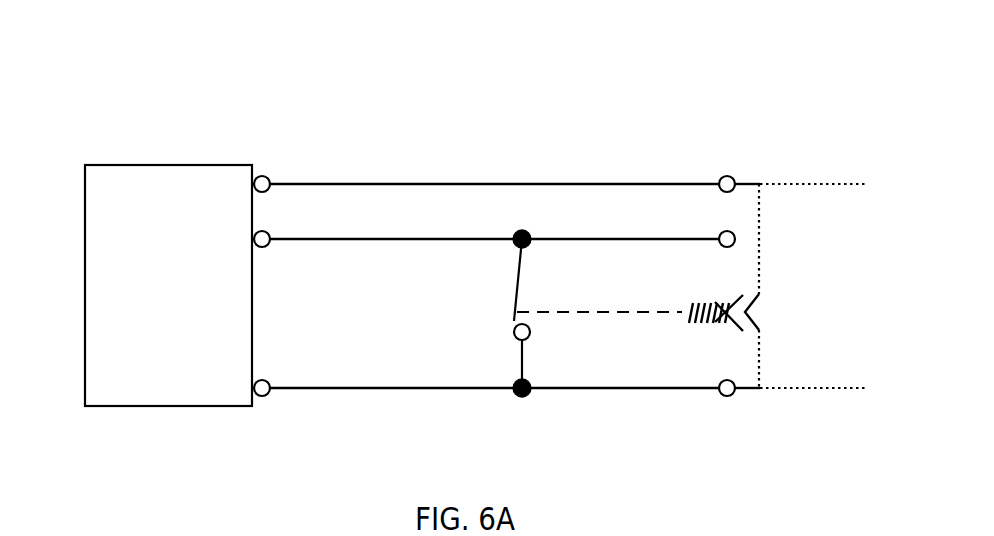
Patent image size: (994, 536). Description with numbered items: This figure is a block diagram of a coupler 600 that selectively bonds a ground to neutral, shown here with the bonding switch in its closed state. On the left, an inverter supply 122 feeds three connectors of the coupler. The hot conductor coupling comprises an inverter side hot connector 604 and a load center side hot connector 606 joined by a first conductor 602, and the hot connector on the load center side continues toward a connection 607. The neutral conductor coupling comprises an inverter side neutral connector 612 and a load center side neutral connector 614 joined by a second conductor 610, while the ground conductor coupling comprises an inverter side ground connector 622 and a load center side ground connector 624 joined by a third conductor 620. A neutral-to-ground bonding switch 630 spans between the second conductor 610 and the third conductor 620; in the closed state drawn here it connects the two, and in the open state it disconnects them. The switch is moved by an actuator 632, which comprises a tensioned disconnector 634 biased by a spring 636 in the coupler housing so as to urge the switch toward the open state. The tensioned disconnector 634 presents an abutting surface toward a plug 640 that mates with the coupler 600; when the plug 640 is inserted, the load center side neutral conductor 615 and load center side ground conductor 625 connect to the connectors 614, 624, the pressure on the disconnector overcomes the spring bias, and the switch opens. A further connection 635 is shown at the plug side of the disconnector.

The coupler 600 is at (568, 72).
The inverter supply 122 is at (183, 311).
The first conductor 602 is at (347, 183).
The inverter side hot connector 604 is at (269, 178).
The load center side hot connector 606 is at (735, 178).
The first output connection 607 is at (760, 187).
The second conductor 610 is at (345, 239).
The inverter side neutral connector 612 is at (270, 234).
The load center side neutral connector 614 is at (721, 234).
The load center side neutral conductor 615 is at (760, 241).
The third conductor 620 is at (345, 388).
The inverter side ground connector 622 is at (270, 383).
The load center side ground connector 624 is at (722, 396).
The load center side ground conductor 625 is at (760, 391).
The neutral-to-ground bonding switch 630 is at (515, 281).
The actuator 632 is at (641, 313).
The tensioned disconnector 634 is at (732, 325).
The connector 635 is at (760, 331).
The spring 636 is at (692, 304).
The plug 640 is at (822, 186).